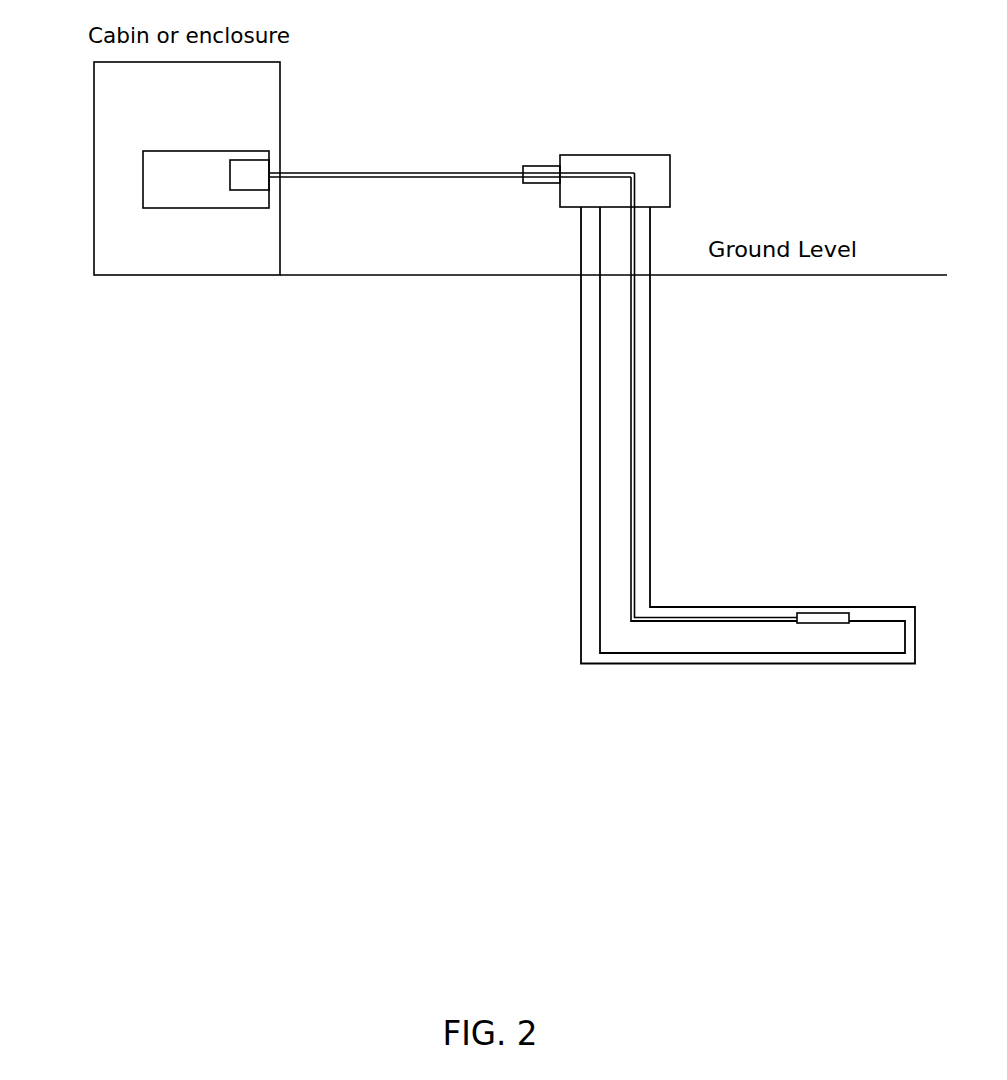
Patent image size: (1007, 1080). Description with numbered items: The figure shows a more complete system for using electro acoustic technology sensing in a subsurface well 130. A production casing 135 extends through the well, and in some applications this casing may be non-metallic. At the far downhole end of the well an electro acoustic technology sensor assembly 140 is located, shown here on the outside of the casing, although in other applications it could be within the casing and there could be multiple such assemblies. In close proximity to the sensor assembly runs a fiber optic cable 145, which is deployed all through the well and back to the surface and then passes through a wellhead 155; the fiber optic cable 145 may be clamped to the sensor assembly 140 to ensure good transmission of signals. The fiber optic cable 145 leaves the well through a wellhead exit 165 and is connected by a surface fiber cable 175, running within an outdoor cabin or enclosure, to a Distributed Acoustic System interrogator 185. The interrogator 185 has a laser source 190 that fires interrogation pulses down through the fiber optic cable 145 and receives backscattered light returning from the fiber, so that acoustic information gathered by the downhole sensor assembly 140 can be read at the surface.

The subsurface well 130 is at (582, 380).
The production casing 135 is at (605, 507).
The electro acoustic technology sensor assembly 140 is at (826, 612).
The fiber optic cable 145 is at (635, 410).
The wellhead 155 is at (671, 165).
The wellhead exit 165 is at (537, 166).
The surface fiber cable 175 is at (382, 173).
The Distributed Acoustic System interrogator 185 is at (168, 209).
The laser source 190 is at (250, 190).